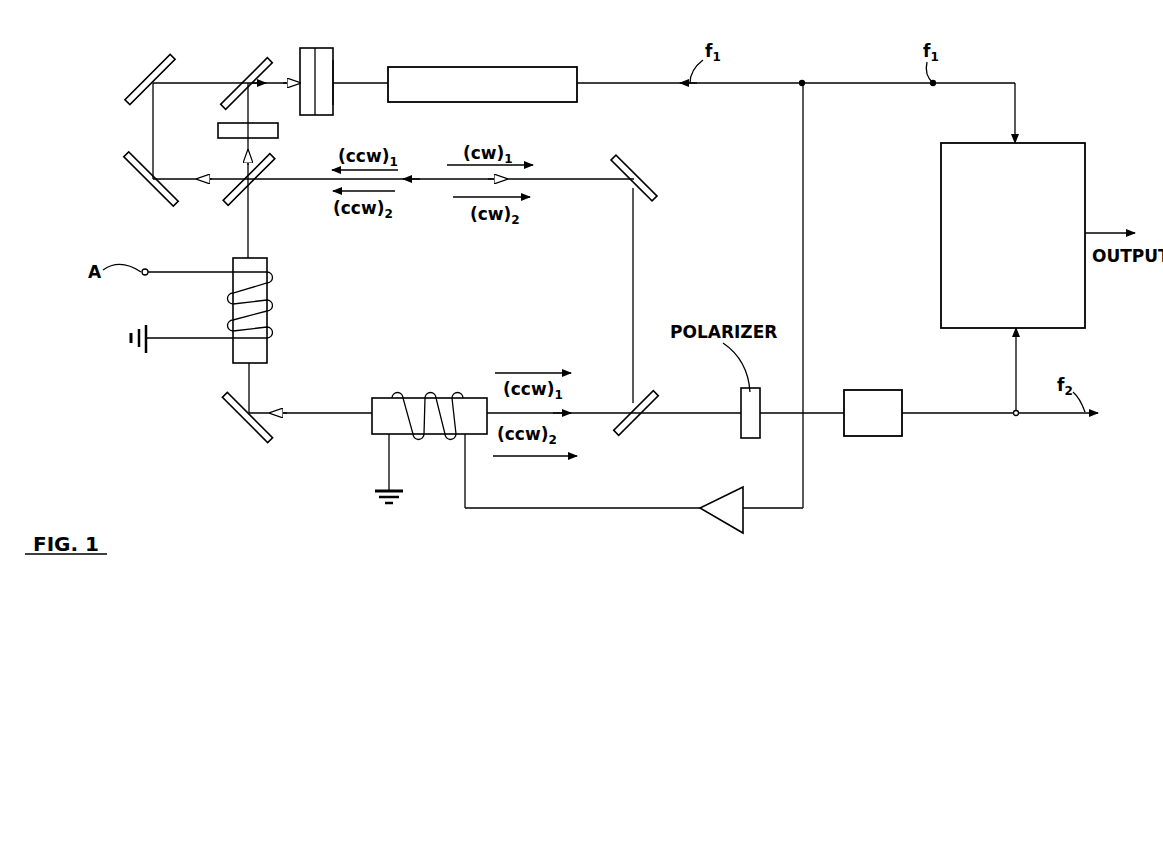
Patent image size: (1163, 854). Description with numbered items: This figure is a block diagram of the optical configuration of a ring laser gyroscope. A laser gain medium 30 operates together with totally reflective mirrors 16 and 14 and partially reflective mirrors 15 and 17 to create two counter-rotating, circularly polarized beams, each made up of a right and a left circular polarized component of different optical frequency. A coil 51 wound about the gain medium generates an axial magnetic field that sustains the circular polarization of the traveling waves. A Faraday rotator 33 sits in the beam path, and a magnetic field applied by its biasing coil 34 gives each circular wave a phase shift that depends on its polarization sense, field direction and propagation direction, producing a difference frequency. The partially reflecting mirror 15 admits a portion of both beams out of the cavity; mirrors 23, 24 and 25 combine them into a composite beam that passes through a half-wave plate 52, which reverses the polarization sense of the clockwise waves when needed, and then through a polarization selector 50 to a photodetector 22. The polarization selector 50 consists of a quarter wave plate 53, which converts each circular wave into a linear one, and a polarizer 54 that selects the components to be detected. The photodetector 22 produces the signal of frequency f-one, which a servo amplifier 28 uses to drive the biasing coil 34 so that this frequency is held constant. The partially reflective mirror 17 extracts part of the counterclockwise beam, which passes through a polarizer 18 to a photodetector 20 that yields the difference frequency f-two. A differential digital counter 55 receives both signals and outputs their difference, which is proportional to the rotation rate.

The totally reflective mirror 14 is at (240, 408).
The partially reflective mirror 15 is at (231, 207).
The totally reflective mirror 16 is at (649, 186).
The partially reflective mirror 17 is at (632, 421).
The polarizer 18 is at (753, 425).
The photodetector 20 is at (890, 422).
The photodetector 22 is at (560, 72).
The mirror 23 is at (156, 69).
The mirror 24 is at (144, 178).
The mirror 25 is at (248, 78).
The servo amplifier 28 is at (731, 513).
The laser gain medium 30 is at (243, 345).
The Faraday rotator 33 is at (447, 405).
The biasing coil 34 is at (444, 440).
The polarization selector 50 is at (309, 48).
The coil 51 is at (233, 311).
The half-wave plate 52 is at (237, 128).
The quarter wave plate 53 is at (310, 108).
The polarizer 54 is at (335, 98).
The differential digital counter 55 is at (1033, 284).